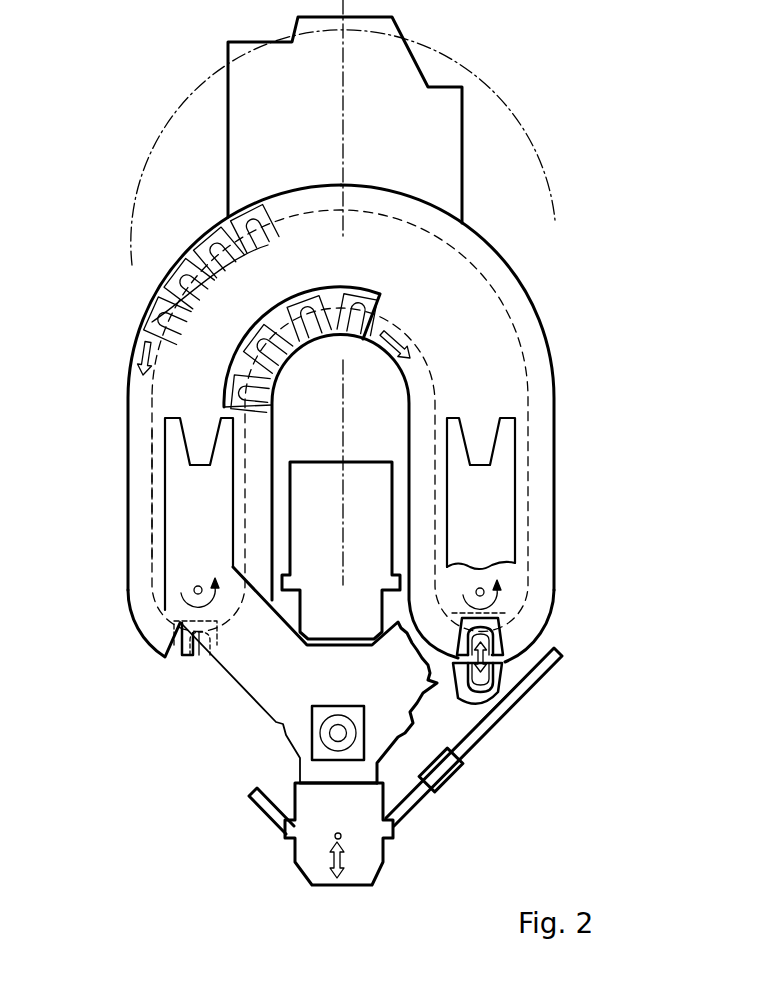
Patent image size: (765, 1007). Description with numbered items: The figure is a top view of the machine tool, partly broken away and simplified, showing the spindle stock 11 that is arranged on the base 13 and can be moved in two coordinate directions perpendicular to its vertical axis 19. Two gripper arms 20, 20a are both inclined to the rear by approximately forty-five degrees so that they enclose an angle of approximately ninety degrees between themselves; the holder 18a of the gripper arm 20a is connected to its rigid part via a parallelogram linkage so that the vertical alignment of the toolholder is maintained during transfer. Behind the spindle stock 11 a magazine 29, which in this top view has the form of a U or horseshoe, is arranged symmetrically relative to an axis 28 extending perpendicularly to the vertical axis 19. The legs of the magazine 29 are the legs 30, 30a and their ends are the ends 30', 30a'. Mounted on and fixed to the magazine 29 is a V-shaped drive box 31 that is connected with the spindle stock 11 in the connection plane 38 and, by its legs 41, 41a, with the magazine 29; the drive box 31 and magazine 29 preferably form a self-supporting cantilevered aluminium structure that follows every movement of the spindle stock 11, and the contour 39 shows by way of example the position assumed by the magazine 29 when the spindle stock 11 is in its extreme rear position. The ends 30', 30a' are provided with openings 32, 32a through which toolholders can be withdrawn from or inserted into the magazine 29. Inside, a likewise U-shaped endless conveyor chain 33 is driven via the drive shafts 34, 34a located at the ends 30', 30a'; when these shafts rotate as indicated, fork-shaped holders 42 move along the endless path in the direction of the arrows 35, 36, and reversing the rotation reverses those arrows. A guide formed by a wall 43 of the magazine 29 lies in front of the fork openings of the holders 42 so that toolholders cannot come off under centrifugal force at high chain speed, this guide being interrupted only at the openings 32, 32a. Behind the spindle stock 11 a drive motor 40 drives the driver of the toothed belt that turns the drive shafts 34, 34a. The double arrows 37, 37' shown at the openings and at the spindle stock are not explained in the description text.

The spindle stock 11 is at (370, 867).
The base 13 is at (447, 180).
The holder 18a is at (487, 700).
The vertical axis 19 is at (341, 836).
The gripper arm 20 is at (277, 810).
The gripper arm 20a is at (413, 797).
The axis 28 is at (345, 127).
The magazine 29 is at (303, 242).
The leg of the magazine 30 is at (201, 387).
The leg of the magazine 30a is at (497, 387).
The end of the magazine leg 30' is at (127, 626).
The end of the magazine leg 30a' is at (564, 617).
The drive box 31 is at (257, 687).
The opening 32 is at (172, 660).
The opening 32a is at (507, 641).
The endless conveyor chain 33 is at (150, 523).
The drive shaft 34 is at (197, 587).
The drive shaft 34a is at (485, 590).
The arrow 35 is at (137, 350).
The arrow 36 is at (387, 332).
The double arrow movement 37 is at (534, 676).
The double arrow movement 37' is at (311, 881).
The connection plane 38 is at (333, 787).
The contour 39 is at (510, 78).
The drive motor 40 is at (313, 738).
The leg of the drive box 41 is at (203, 483).
The leg of the drive box 41a is at (480, 483).
The fork-shaped holder 42 is at (203, 252).
The wall 43 is at (207, 233).